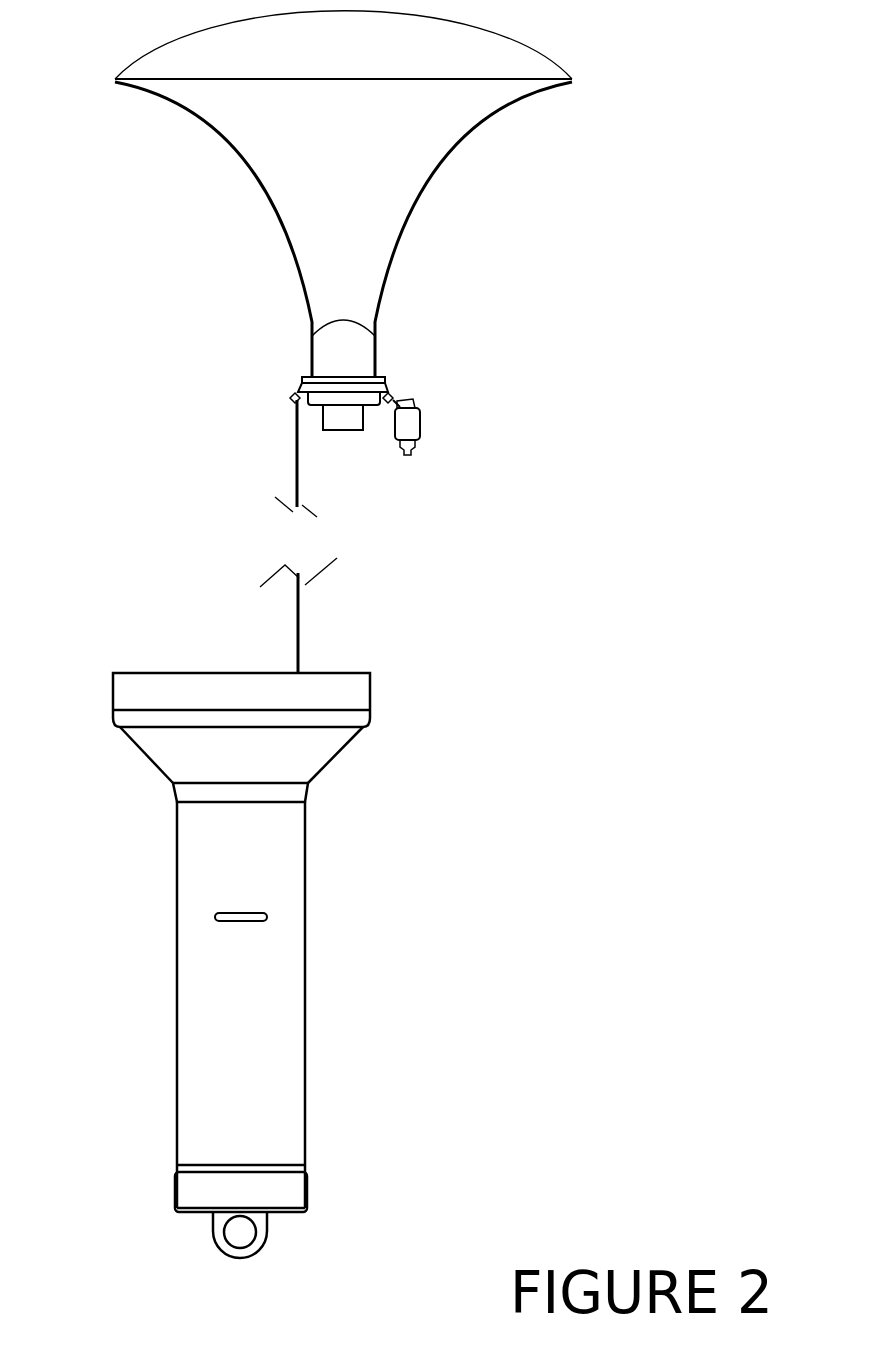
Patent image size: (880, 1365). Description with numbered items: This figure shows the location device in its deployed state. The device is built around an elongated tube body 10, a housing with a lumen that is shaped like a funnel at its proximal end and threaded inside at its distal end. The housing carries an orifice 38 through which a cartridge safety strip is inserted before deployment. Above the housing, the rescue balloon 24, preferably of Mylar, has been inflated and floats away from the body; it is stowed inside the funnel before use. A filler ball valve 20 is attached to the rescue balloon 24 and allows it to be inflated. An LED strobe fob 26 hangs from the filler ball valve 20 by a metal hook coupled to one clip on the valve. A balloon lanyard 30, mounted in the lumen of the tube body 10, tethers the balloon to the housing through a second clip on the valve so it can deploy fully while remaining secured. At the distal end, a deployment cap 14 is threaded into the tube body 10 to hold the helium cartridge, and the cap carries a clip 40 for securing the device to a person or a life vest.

The tube body 10 is at (305, 881).
The deployment cap 14 is at (308, 1182).
The filler ball valve 20 is at (392, 373).
The rescue balloon 24 is at (298, 255).
The LED strobe fob 26 is at (461, 411).
The balloon lanyard 30 is at (296, 460).
The orifice 38 is at (226, 912).
The clip 40 is at (238, 1237).